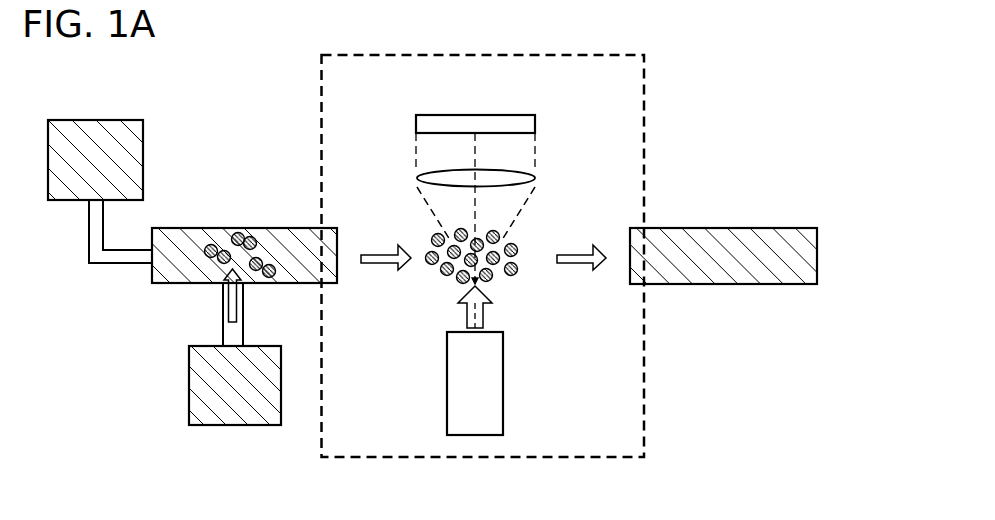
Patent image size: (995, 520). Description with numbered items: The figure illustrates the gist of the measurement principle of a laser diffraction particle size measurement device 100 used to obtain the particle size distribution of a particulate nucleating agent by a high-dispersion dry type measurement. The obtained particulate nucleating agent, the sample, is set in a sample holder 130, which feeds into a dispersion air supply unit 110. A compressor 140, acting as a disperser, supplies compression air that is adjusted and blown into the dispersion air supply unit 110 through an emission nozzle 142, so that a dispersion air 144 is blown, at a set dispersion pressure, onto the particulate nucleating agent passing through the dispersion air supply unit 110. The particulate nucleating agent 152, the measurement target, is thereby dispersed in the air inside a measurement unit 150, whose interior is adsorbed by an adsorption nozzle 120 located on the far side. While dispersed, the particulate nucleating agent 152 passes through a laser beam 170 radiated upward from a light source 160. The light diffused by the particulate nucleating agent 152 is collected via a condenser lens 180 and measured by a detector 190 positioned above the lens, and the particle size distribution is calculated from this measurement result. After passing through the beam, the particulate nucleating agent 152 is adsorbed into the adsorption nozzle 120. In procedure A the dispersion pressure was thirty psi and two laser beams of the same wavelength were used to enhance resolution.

The laser diffraction particle size measurement device 100 is at (783, 454).
The dispersion air supply unit 110 is at (180, 235).
The adsorption nozzle 120 is at (768, 236).
The sample holder 130 is at (140, 143).
The compressor 140 is at (197, 408).
The emission nozzle 142 is at (227, 340).
The dispersion air 144 is at (237, 297).
The measurement unit 150 is at (647, 65).
The particulate nucleating agent 152 is at (528, 228).
The light source 160 is at (488, 414).
The laser beam 170 is at (487, 302).
The condenser lens 180 is at (534, 177).
The detector 190 is at (527, 122).